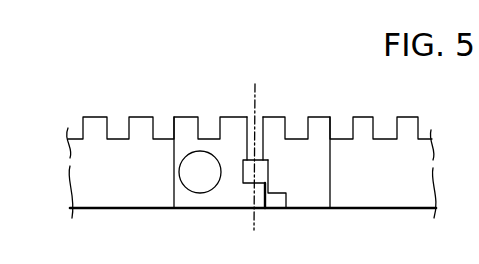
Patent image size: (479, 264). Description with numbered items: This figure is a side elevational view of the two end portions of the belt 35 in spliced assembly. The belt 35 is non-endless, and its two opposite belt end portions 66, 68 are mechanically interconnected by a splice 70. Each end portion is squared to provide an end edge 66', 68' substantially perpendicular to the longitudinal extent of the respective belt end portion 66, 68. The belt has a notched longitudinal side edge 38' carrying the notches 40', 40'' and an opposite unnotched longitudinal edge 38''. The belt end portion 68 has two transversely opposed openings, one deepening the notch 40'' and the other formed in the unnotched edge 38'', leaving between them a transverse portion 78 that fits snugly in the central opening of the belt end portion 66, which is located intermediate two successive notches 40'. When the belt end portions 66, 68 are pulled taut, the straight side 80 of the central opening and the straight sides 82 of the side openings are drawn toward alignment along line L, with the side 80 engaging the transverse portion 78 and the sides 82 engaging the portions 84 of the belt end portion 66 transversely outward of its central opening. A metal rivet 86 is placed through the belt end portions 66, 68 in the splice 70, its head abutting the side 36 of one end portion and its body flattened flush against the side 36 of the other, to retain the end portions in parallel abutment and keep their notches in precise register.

The belt 35 is at (68, 157).
The side of belt end portion 36 is at (251, 161).
The notched longitudinal side edge 38' is at (250, 108).
The unnotched longitudinal edge 38'' is at (239, 226).
The notch 40' is at (232, 90).
The notch 40'' is at (226, 101).
The belt end portion 66 is at (174, 175).
The end edge 66' is at (148, 162).
The belt end portion 68 is at (352, 176).
The end edge 68' is at (354, 162).
The splice 70 is at (184, 91).
The transverse portion 78 is at (270, 173).
The straight linear side 80 is at (262, 150).
The straight linear sides 82 is at (266, 149).
The portions of belt end portion 84 is at (262, 96).
The rivet 86 is at (182, 188).
The line L is at (257, 84).